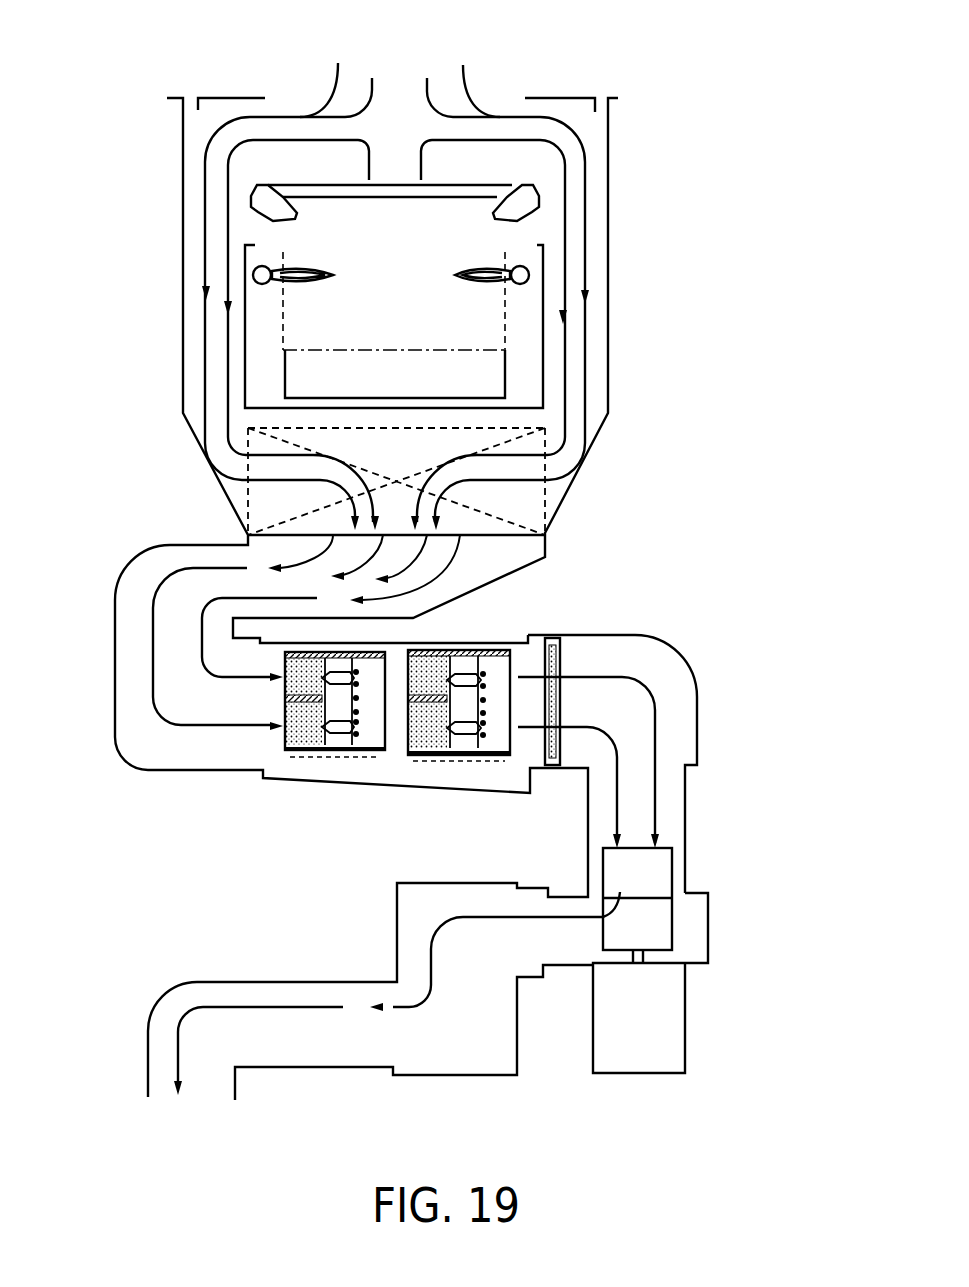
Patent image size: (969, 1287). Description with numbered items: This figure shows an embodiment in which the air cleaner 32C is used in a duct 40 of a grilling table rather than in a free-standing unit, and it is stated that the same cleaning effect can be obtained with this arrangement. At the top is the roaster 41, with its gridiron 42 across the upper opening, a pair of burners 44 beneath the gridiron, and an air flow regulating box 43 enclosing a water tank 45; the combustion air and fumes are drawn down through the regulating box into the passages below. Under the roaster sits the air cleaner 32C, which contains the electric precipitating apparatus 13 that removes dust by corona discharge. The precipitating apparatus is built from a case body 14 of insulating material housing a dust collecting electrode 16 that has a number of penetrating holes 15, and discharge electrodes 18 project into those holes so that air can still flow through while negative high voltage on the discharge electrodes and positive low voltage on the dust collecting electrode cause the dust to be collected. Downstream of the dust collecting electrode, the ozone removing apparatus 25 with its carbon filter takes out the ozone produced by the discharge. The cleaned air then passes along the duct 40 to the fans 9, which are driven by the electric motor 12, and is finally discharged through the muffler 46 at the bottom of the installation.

The roaster 41 is at (608, 183).
The gridiron 42 is at (460, 187).
The burner 44 is at (255, 268).
The air flow regulating box 43 is at (543, 357).
The water tank 45 is at (505, 380).
The air cleaner 32C is at (240, 748).
The dust collecting electrode 16 is at (297, 668).
The penetrating holes 15 is at (290, 715).
The discharge electrodes 18 is at (470, 652).
The electric precipitating apparatus 13 is at (276, 754).
The case body 14 is at (340, 749).
The ozone removing apparatus 25 is at (568, 660).
The duct 40 is at (678, 660).
The fans 9 is at (672, 872).
The electric motor 12 is at (680, 1038).
The muffler 46 is at (440, 1070).